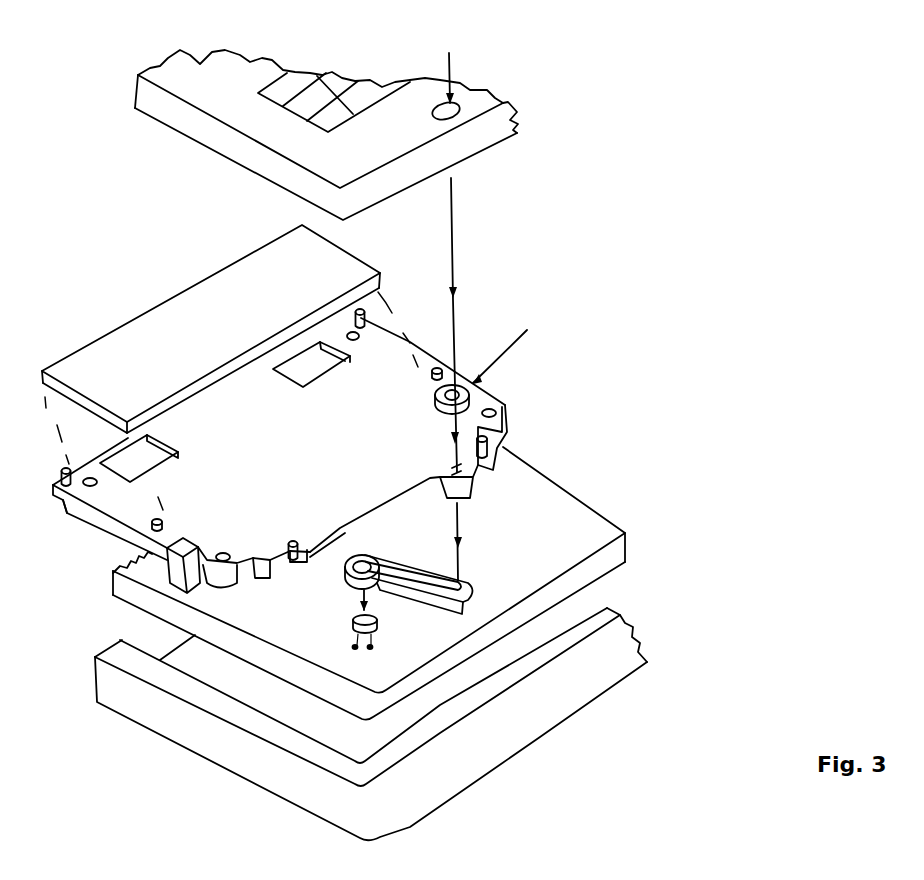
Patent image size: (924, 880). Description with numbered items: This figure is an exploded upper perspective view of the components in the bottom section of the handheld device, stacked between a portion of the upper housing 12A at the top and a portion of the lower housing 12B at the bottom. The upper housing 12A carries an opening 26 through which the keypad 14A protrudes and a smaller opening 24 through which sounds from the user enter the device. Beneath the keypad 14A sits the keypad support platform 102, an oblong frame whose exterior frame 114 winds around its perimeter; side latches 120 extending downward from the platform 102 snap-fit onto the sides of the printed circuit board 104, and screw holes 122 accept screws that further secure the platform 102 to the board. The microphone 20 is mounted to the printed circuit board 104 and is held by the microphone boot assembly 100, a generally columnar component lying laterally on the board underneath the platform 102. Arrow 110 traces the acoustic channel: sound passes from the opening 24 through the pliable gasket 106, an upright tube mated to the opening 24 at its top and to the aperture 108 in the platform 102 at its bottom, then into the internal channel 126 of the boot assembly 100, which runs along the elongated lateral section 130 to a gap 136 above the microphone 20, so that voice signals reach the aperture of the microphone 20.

The upper housing 12A is at (195, 92).
The lower housing 12B is at (583, 695).
The opening 26 is at (356, 75).
The opening 24 is at (427, 122).
The arrow 110 is at (486, 316).
The keypad 14A is at (145, 330).
The elongated lateral section 130 is at (225, 412).
The keypad support platform 102 is at (563, 413).
The screw holes 122 is at (355, 341).
The gasket 106 is at (435, 405).
The aperture 108 is at (432, 456).
The exterior frame 114 is at (97, 517).
The side latches 120 is at (168, 547).
The microphone boot assembly 100 is at (573, 566).
The internal channel 126 is at (403, 565).
The gap 136 is at (365, 555).
The microphone 20 is at (395, 642).
The printed circuit board 104 is at (369, 583).